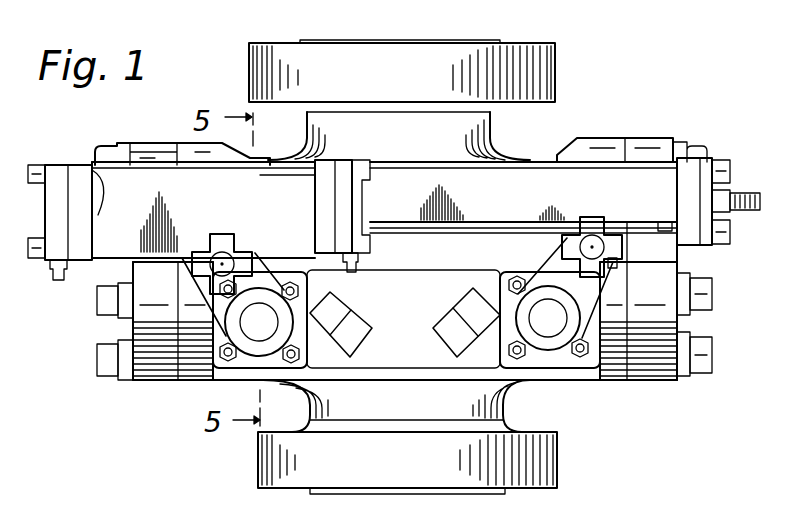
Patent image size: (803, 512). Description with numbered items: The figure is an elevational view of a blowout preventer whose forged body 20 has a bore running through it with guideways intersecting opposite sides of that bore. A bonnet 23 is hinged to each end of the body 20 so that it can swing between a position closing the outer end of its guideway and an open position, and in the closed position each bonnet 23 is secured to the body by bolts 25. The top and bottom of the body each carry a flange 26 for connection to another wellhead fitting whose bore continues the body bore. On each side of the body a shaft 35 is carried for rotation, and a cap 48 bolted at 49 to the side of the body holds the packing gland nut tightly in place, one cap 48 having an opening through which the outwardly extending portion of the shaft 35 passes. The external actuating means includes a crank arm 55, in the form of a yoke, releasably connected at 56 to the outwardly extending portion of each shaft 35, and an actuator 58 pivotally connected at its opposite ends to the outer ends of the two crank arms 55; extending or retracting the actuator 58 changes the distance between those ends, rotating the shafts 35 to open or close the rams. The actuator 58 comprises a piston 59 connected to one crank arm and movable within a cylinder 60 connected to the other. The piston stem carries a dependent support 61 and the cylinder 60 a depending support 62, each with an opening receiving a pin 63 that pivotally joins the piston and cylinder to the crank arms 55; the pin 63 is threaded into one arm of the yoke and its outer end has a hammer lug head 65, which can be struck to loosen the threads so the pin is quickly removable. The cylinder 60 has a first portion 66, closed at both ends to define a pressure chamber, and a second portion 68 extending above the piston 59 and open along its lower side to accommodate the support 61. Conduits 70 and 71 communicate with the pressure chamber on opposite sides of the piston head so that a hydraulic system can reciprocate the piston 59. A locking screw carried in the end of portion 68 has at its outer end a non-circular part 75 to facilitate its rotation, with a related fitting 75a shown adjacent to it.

The body 20 is at (566, 381).
The bonnet 23 is at (653, 140).
The bolts 25 is at (708, 370).
The flange 26 is at (556, 52).
The shaft 35 is at (306, 336).
The cap 48 is at (328, 289).
The bolts 49 is at (508, 283).
The crank arm 55 is at (210, 296).
The releasable connection 56 is at (599, 325).
The actuator 58 is at (402, 158).
The piston 59 is at (464, 236).
The cylinder 60 is at (150, 163).
The dependent support 61 is at (617, 261).
The depending support 62 is at (180, 264).
The pin 63 is at (236, 250).
The hammer lug head 65 is at (216, 238).
The first portion 66 is at (222, 208).
The second portion 68 is at (522, 203).
The conduit 70 is at (60, 280).
The conduit 71 is at (358, 268).
The non-circular part 75 is at (750, 190).
The vent plug 75a is at (658, 226).